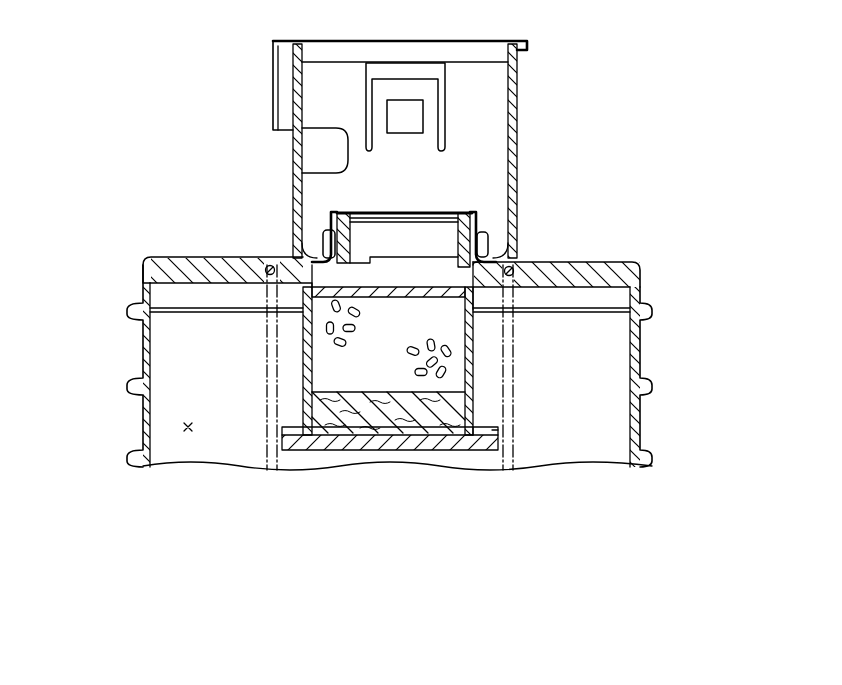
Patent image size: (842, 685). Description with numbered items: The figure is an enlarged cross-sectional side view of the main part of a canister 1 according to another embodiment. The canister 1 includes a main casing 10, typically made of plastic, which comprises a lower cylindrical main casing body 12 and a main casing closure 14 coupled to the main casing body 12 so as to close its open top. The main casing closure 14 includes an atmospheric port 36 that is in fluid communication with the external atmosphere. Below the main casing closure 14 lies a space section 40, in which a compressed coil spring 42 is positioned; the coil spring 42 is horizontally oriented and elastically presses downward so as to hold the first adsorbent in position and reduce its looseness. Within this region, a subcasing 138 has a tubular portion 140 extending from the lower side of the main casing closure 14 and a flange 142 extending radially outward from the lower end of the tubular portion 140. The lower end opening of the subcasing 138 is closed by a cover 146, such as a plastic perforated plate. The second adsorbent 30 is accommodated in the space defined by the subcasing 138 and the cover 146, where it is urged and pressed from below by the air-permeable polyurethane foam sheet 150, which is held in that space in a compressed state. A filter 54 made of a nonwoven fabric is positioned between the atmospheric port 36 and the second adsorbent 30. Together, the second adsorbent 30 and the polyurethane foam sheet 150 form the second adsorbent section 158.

The canister 1 is at (120, 208).
The main casing 10 is at (722, 265).
The main casing body 12 is at (638, 344).
The main casing closure 14 is at (638, 265).
The second adsorbent 30 is at (421, 378).
The atmospheric port 36 is at (467, 213).
The space section 40 is at (186, 427).
The compressed coil spring 42 is at (268, 266).
The filter 54 is at (398, 290).
The subcasing 138 is at (303, 372).
The tubular portion 140 is at (303, 338).
The flange 142 is at (293, 418).
The cover 146 is at (477, 446).
The polyurethane foam sheet 150 is at (392, 436).
The second adsorbent section 158 is at (345, 526).